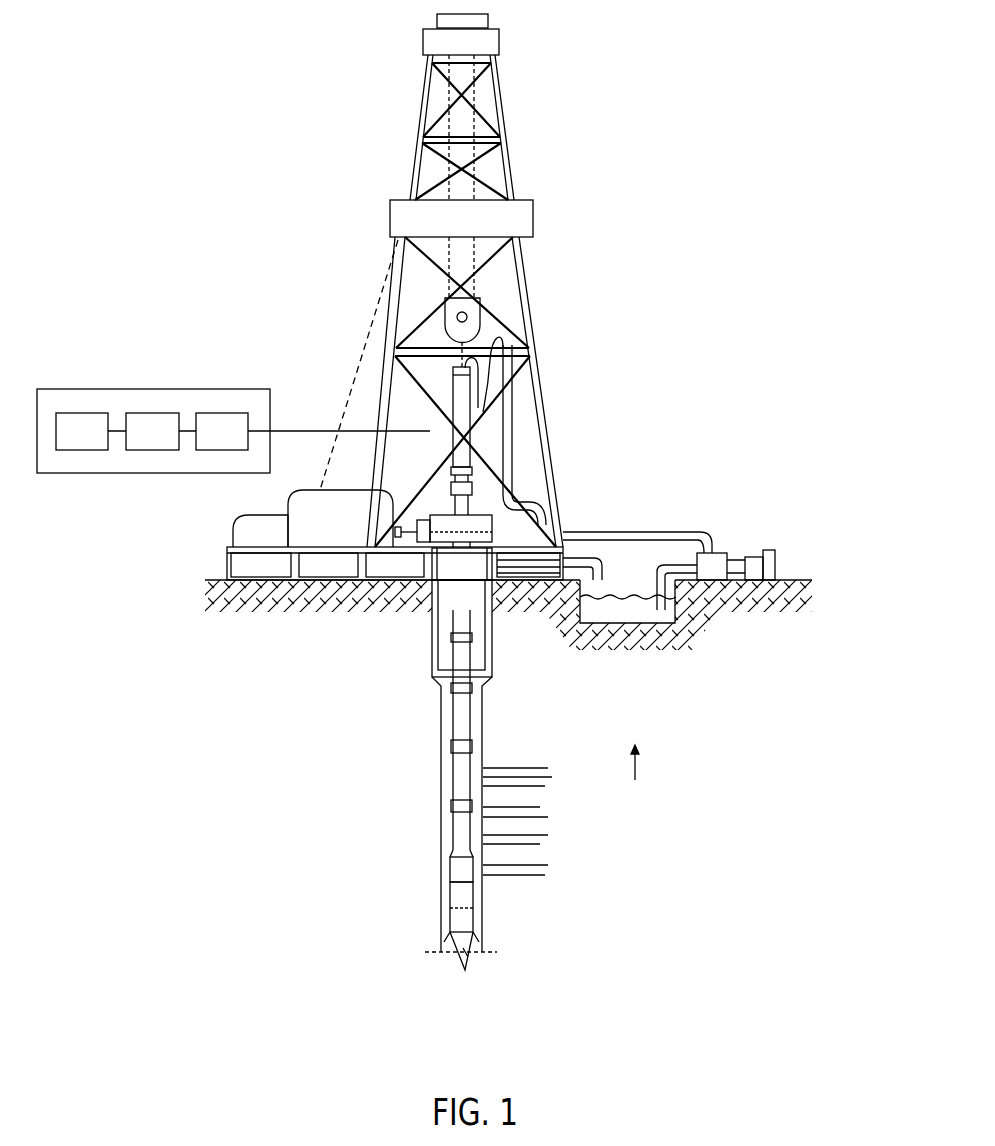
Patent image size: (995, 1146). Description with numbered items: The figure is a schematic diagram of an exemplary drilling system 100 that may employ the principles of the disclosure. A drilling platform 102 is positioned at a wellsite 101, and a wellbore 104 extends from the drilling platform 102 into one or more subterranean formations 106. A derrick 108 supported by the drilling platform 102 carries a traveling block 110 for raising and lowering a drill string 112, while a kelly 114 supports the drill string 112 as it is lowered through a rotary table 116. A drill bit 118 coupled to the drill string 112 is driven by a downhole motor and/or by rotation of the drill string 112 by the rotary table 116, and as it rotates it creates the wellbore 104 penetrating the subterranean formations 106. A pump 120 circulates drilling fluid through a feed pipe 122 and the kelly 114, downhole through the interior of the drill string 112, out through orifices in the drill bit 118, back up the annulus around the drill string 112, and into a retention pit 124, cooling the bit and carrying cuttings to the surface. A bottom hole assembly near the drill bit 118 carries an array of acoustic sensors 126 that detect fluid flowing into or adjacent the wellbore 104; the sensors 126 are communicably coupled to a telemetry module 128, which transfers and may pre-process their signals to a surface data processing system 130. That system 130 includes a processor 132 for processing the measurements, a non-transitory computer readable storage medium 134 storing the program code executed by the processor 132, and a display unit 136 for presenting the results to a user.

The drilling system 100 is at (674, 262).
The wellsite 101 is at (792, 560).
The drilling platform 102 is at (226, 557).
The wellbore 104 is at (482, 732).
The subterranean formations 106 is at (557, 768).
The derrick 108 is at (503, 112).
The traveling block 110 is at (466, 312).
The drill string 112 is at (465, 703).
The kelly 114 is at (463, 402).
The rotary table 116 is at (485, 500).
The drill bit 118 is at (482, 935).
The pump 120 is at (712, 556).
The feed pipe 122 is at (681, 532).
The retention pit 124 is at (650, 625).
The array of acoustic sensors 126 is at (452, 898).
The telemetry module 128 is at (452, 860).
The data processing system 130 is at (233, 399).
The processor 132 is at (99, 444).
The non-transitory computer readable storage medium 134 is at (170, 444).
The display unit 136 is at (239, 444).